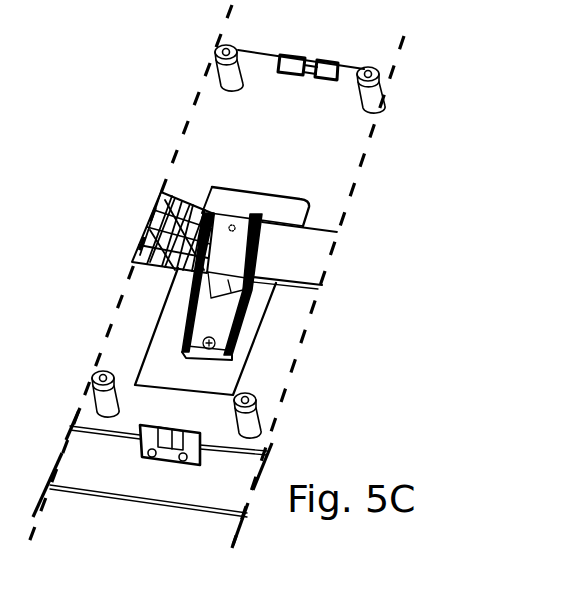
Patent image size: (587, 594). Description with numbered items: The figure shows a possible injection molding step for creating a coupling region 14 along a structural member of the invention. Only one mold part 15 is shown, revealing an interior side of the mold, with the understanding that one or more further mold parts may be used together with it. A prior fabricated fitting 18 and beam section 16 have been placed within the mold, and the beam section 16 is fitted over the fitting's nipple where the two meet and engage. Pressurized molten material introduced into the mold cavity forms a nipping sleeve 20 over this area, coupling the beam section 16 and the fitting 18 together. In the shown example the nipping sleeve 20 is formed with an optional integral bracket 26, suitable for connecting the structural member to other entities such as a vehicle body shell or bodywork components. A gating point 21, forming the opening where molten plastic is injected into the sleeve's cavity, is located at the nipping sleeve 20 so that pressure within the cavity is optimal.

The coupling region 14 is at (236, 184).
The mold part 15 is at (108, 469).
The beam section 16 is at (312, 235).
The fitting 18 is at (154, 268).
The nipping sleeve 20 is at (255, 213).
The gating point 21 is at (230, 223).
The integral bracket 26 is at (213, 322).